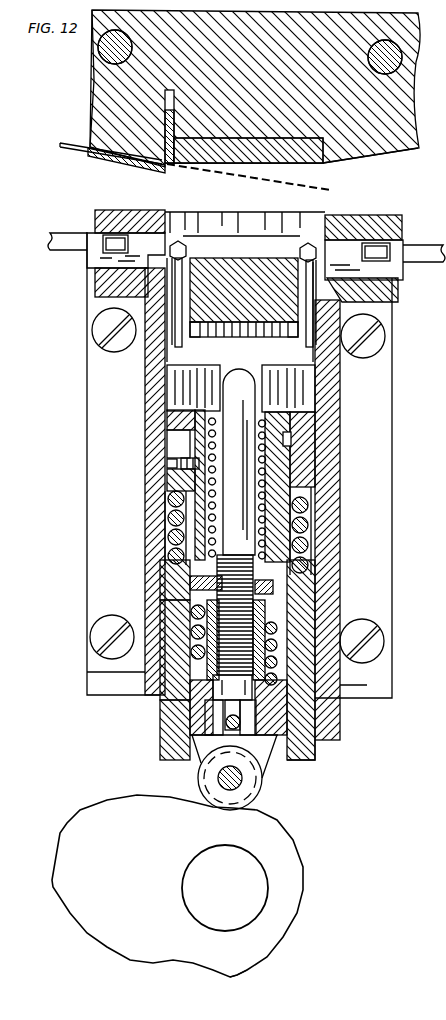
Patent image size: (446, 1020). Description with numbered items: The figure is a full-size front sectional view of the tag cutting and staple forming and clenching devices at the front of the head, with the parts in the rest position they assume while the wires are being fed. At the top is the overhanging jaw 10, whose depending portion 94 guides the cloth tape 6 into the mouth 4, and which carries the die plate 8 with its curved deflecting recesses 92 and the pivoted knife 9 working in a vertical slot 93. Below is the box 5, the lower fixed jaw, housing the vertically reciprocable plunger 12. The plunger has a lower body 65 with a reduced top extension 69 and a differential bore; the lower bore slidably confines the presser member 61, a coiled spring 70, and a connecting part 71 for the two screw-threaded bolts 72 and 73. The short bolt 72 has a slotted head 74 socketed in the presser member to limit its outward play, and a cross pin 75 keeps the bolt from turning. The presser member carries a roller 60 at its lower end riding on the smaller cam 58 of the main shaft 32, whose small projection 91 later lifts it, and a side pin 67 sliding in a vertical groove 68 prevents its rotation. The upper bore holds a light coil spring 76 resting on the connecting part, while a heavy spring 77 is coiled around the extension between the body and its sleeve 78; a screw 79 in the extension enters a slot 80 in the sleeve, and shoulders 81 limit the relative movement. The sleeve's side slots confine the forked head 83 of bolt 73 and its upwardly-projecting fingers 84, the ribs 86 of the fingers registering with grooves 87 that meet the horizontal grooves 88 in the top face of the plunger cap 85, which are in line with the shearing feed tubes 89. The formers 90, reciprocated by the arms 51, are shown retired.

The mouth 4 is at (90, 198).
The box 5 is at (360, 685).
The cloth tape 6 is at (68, 149).
The die plate 8 is at (336, 161).
The pivoted knife 9 is at (94, 126).
The overhanging jaw 10 is at (420, 101).
The plunger 12 is at (315, 430).
The main shaft 32 is at (225, 888).
The forwardly-projecting arm 51 is at (68, 244).
The cam 58 is at (177, 886).
The roller 60 is at (262, 790).
The presser member 61 is at (195, 756).
The lower body 65 is at (300, 758).
The side pin 67 is at (312, 700).
The vertical groove 68 is at (312, 740).
The top extension 69 is at (286, 507).
The coiled spring 70 is at (160, 608).
The connecting part 71 is at (175, 595).
The bolt 72 is at (140, 673).
The bolt 73 is at (239, 470).
The slotted head 74 is at (160, 706).
The cross pin 75 is at (195, 740).
The coil spring 76 is at (198, 520).
The heavy spring 77 is at (168, 507).
The sleeve 78 is at (307, 460).
The screw 79 is at (172, 464).
The slot 80 is at (172, 447).
The shoulders 81 is at (170, 431).
The forked head 83 is at (239, 370).
The fingers 84 is at (172, 293).
The plunger cap 85 is at (246, 260).
The ribs 86 is at (160, 346).
The grooves 87 is at (378, 394).
The horizontal grooves 88 is at (188, 254).
The shearing feed tubes 89 is at (182, 246).
The formers 90 is at (146, 233).
The projection 91 is at (237, 976).
The deflecting recesses 92 is at (317, 165).
The vertical slot 93 is at (165, 92).
The depending portion 94 is at (160, 170).